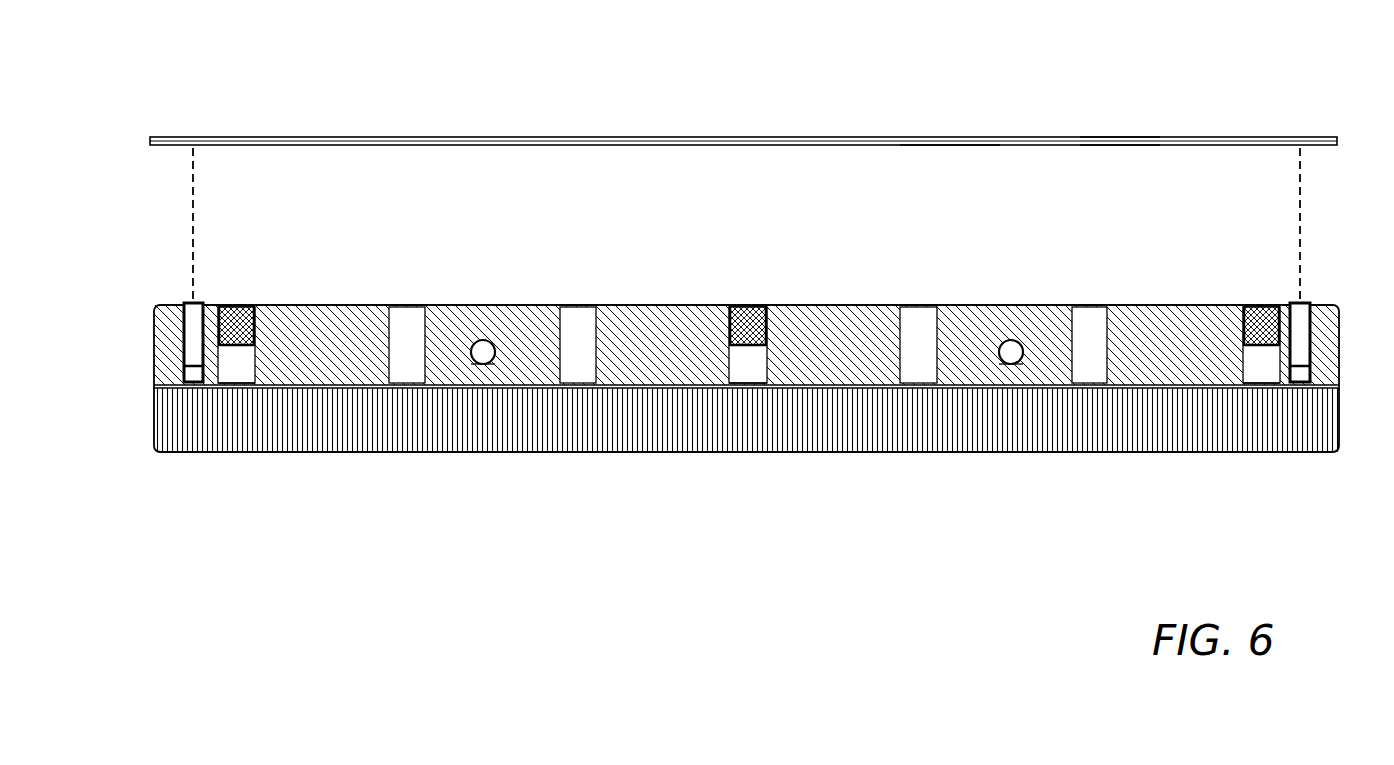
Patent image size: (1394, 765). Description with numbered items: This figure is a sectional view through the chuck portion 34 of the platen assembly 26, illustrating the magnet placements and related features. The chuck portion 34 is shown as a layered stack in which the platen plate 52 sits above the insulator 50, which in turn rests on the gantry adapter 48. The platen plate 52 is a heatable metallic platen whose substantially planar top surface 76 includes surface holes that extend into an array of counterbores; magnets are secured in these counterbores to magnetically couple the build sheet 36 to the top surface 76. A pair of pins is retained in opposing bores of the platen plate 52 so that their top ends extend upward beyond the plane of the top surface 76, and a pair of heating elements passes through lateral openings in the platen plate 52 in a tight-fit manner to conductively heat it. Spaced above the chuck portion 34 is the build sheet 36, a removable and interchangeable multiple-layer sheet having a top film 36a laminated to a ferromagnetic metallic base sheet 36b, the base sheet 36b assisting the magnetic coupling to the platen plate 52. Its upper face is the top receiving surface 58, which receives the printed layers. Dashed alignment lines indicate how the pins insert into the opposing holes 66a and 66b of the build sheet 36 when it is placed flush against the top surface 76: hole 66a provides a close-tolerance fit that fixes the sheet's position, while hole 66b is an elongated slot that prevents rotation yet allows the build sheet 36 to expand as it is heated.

The platen assembly 26 is at (238, 675).
The chuck portion 34 is at (718, 378).
The build sheet 36 is at (752, 117).
The top film 36a is at (1118, 137).
The metallic base sheet 36b is at (1118, 146).
The gantry adapter 48 is at (646, 452).
The insulator 50 is at (153, 390).
The platen plate 52 is at (162, 330).
The top receiving surface 58 is at (950, 137).
The hole 66a is at (1298, 128).
The hole 66b is at (195, 128).
The top surface 76 is at (872, 304).